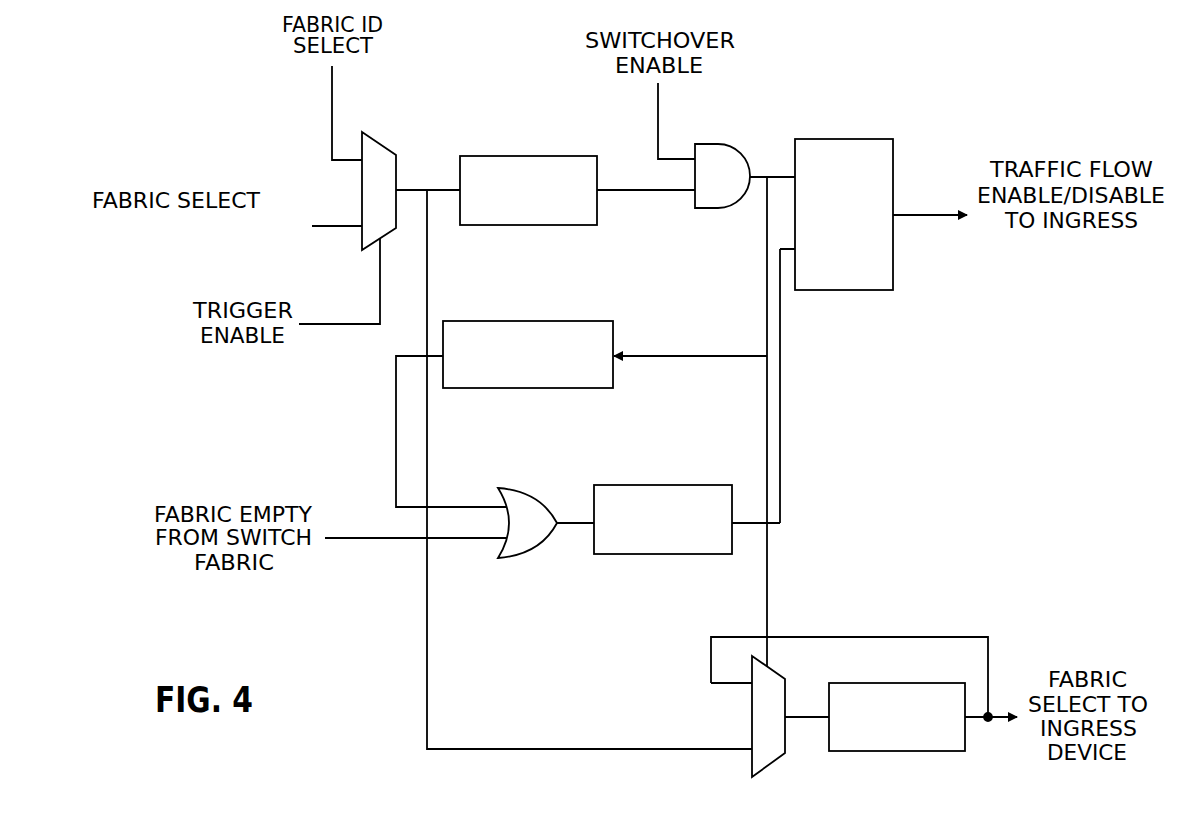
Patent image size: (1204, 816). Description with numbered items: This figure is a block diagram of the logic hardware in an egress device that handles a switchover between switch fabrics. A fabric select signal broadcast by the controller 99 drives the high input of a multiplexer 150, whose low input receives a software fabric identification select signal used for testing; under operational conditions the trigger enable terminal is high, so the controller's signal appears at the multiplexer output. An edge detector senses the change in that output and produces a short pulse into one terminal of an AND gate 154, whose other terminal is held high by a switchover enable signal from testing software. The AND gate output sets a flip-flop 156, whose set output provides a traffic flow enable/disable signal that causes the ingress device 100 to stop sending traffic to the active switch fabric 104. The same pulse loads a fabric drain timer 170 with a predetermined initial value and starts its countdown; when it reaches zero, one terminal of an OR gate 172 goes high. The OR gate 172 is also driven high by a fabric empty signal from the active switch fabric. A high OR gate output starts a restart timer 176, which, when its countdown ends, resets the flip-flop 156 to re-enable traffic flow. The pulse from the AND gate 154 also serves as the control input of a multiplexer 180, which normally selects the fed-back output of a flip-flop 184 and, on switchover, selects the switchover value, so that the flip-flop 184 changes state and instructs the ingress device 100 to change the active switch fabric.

The multiplexer 150 is at (380, 144).
The switch fabric 104 is at (530, 156).
The AND gate 154 is at (720, 143).
The flip-flop 156 is at (845, 139).
The fabric drain timer 170 is at (527, 321).
The OR gate 172 is at (523, 490).
The restart timer 176 is at (660, 485).
The multiplexer 180 is at (770, 764).
The flip-flop 184 is at (895, 751).
The controller 99 is at (175, 228).
The ingress device 100 is at (1071, 248).